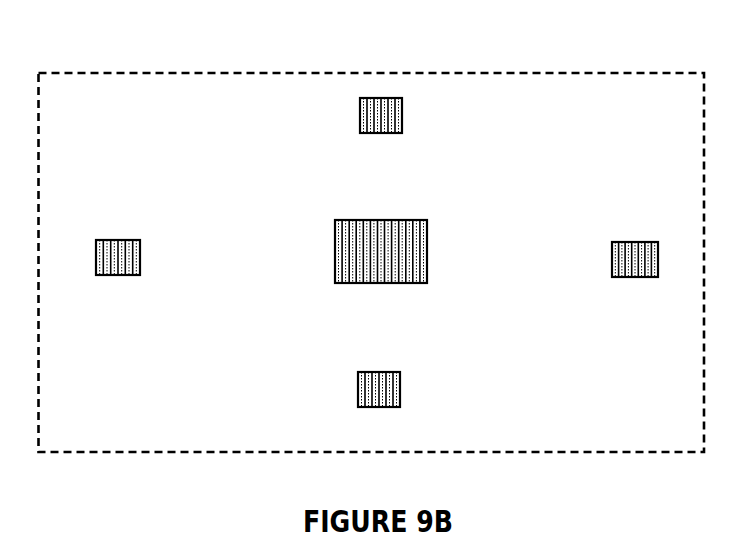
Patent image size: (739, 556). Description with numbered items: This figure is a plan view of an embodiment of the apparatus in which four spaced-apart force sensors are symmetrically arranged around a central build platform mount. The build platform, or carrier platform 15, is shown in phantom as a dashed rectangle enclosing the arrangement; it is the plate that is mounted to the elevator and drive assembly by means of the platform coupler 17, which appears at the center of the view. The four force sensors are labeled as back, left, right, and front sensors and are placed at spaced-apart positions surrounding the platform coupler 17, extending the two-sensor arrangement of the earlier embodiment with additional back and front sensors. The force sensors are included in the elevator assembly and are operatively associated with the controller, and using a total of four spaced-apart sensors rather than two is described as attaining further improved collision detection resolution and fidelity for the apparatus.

The carrier platform 15 is at (552, 73).
The platform coupler 17 is at (395, 262).